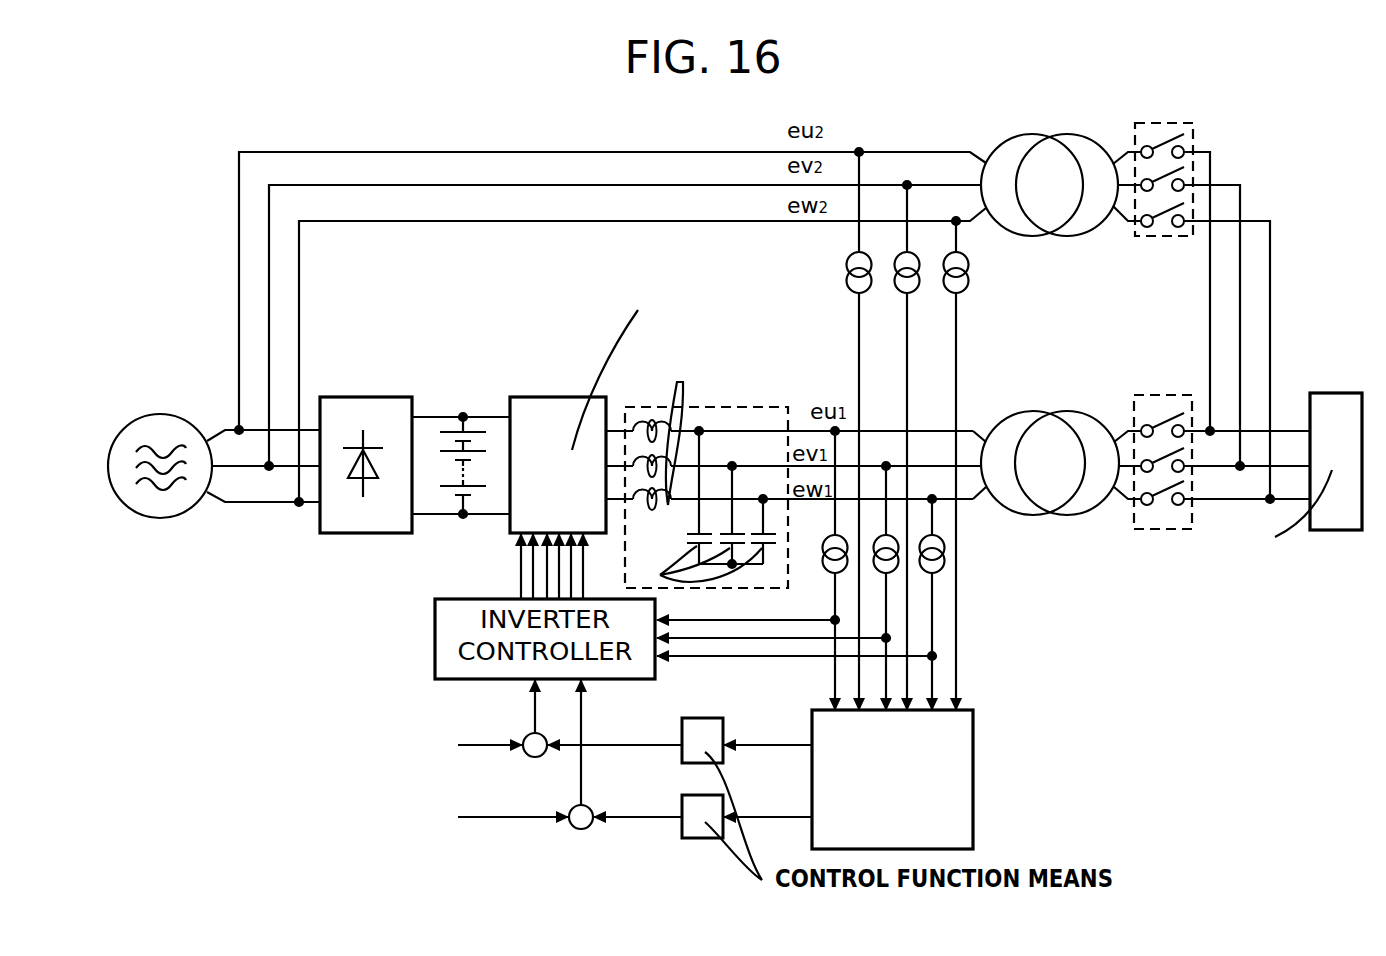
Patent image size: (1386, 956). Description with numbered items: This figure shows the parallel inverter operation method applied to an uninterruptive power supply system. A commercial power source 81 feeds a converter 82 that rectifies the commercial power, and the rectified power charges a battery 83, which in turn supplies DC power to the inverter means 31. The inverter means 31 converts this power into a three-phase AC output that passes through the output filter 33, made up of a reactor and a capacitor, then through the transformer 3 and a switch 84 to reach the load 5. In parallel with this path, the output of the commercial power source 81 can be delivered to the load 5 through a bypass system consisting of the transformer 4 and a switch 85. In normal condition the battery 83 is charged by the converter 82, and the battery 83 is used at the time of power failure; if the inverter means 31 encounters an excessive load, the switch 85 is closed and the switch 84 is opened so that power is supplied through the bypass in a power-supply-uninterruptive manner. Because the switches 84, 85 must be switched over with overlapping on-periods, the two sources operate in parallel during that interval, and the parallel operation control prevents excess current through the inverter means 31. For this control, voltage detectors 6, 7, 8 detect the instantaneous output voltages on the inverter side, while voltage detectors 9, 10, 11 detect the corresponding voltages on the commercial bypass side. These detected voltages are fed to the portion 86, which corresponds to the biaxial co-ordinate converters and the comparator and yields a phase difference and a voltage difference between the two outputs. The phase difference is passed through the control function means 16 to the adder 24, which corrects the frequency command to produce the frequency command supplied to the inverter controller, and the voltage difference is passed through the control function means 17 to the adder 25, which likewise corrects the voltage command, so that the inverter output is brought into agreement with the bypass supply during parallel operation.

The commercial power source 81 is at (169, 415).
The converter 82 is at (363, 397).
The battery 83 is at (446, 465).
The inverter means 31 is at (555, 397).
The output filter 33 is at (736, 405).
The transformer 3 is at (1028, 415).
The switch 84 is at (1163, 395).
The load 5 is at (1337, 393).
The transformer 4 is at (1031, 135).
The switch 85 is at (1167, 123).
The voltage detector 9 is at (846, 285).
The voltage detector 10 is at (914, 291).
The voltage detector 11 is at (969, 281).
The voltage detector 6 is at (831, 568).
The voltage detector 7 is at (898, 563).
The voltage detector 8 is at (945, 556).
The co-ordinate converting and comparing portion 86 is at (973, 748).
The control function means 16 is at (706, 718).
The control function means 17 is at (705, 838).
The adder 24 is at (535, 758).
The adder 25 is at (581, 830).